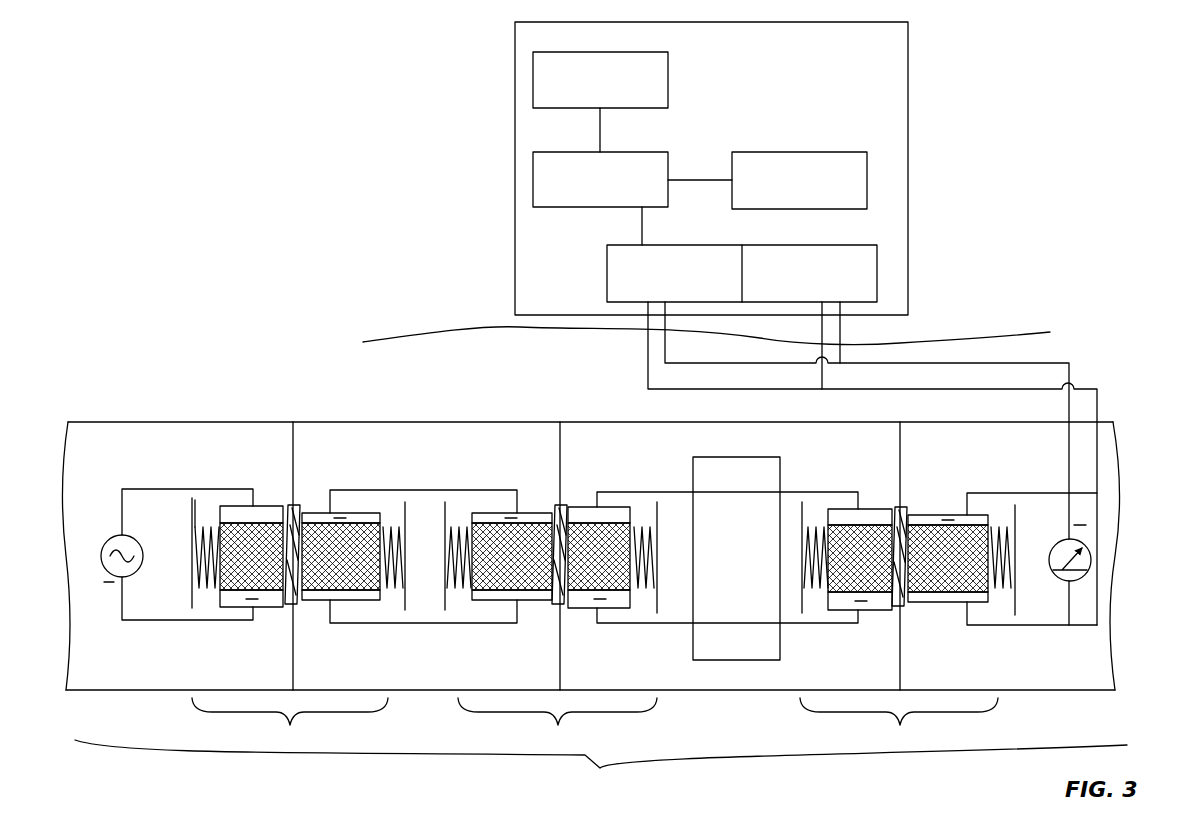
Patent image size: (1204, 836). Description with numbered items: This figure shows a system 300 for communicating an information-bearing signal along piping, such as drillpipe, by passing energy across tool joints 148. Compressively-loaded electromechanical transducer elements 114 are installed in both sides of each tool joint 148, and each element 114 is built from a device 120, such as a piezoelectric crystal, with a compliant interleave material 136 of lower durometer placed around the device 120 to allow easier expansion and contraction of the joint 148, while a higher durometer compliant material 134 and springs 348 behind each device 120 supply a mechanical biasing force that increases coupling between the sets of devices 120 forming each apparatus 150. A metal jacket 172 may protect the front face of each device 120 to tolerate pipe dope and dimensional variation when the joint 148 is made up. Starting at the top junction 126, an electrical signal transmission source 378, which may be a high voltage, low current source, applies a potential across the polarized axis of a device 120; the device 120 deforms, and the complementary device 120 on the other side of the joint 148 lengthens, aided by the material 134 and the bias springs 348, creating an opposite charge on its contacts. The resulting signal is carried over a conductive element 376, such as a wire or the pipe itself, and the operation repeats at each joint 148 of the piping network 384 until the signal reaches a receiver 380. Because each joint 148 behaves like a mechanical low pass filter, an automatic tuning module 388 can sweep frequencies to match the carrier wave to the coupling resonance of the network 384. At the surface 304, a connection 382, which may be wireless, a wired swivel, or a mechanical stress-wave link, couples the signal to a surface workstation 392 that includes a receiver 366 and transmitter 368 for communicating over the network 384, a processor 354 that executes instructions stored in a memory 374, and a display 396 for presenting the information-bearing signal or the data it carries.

The system 300 is at (305, 98).
The surface 304 is at (478, 330).
The surface workstation 392 is at (908, 98).
The display 396 is at (578, 52).
The processor 354 is at (580, 152).
The memory 374 is at (750, 152).
The receiver 366 is at (622, 245).
The transmitter 368 is at (775, 245).
The connection 382 is at (1027, 389).
The tool joint 148 is at (293, 417).
The apparatus 150 is at (595, 727).
The piping network 384 is at (601, 769).
The conductive element 376 is at (130, 622).
The electrical signal transmission source 378 is at (122, 535).
The receiver 380 is at (1092, 558).
The automatic tuning module 388 is at (720, 457).
The compliant material 134 is at (203, 510).
The springs 348 is at (1003, 523).
The top junction 126 is at (255, 506).
The compliant interleave material 136 is at (308, 515).
The device 120 is at (228, 607).
The electromechanical transducer element 114 is at (530, 487).
The metal jacket 172 is at (557, 597).